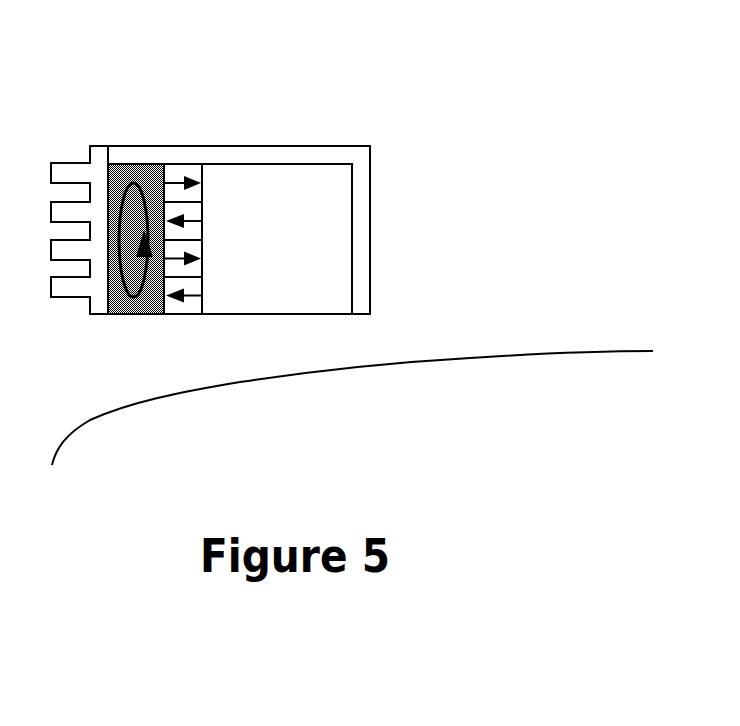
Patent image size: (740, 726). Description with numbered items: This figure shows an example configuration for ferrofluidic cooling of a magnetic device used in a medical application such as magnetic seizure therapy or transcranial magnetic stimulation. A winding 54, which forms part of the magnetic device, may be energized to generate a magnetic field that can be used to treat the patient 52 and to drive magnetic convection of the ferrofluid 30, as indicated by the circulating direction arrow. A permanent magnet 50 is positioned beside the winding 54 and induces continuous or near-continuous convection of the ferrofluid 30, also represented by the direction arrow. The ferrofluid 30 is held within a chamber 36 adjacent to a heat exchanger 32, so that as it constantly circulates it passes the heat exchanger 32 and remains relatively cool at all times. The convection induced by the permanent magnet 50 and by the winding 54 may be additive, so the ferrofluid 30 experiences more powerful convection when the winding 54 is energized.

The heat exchanger 32 is at (74, 147).
The ferrofluid 30 is at (156, 169).
The permanent magnet 50 is at (215, 152).
The winding 54 is at (277, 239).
The chamber 36 is at (144, 322).
The patient 52 is at (352, 408).